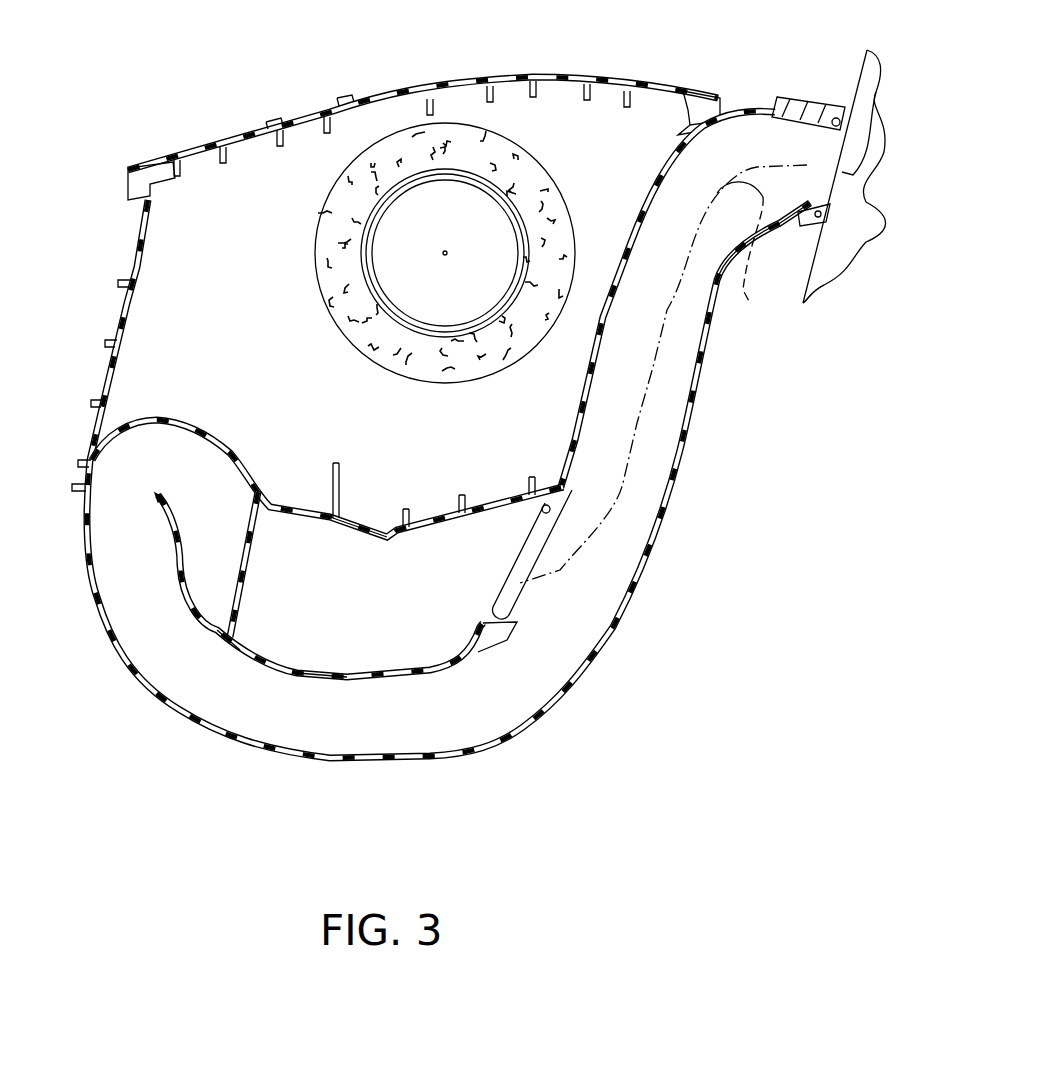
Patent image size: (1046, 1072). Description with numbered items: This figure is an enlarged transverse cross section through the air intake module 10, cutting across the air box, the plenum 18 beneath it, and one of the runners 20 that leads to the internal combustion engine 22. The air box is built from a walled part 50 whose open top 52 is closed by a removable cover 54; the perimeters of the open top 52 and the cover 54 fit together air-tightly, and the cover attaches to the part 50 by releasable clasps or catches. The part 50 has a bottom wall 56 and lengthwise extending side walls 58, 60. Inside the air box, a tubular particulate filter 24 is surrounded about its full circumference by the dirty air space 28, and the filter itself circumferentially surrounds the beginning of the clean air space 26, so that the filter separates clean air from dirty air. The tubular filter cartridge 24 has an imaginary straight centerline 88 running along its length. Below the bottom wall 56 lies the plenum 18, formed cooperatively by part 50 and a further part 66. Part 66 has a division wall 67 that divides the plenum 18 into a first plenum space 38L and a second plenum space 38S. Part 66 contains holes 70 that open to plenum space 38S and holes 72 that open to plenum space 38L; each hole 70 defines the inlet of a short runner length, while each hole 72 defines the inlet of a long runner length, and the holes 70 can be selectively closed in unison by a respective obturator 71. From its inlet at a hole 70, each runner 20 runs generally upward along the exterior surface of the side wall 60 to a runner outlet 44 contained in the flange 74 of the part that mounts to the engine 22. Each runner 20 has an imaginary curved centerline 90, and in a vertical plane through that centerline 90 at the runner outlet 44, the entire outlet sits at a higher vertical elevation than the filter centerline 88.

The air intake module 10 is at (230, 758).
The plenum 18 is at (225, 645).
The runners 20 is at (650, 556).
The internal combustion engine 22 is at (838, 285).
The tubular particulate filter 24 is at (463, 124).
The clean air space 26 is at (458, 296).
The dirty air space 28 is at (311, 397).
The first plenum space 38L is at (211, 477).
The second plenum space 38S is at (396, 617).
The runner outlets 44 is at (872, 88).
The walled part 50 is at (131, 278).
The open top 52 is at (140, 232).
The removable cover 54 is at (312, 112).
The bottom wall 56 is at (375, 520).
The side wall 58 is at (110, 375).
The side wall 60 is at (585, 420).
The part 66 is at (177, 580).
The division wall 67 is at (243, 570).
The holes 70 is at (557, 523).
The obturator 71 is at (517, 592).
The holes 72 is at (128, 497).
The flange 74 is at (794, 96).
The straight centerline 88 is at (443, 254).
The curved centerline 90 is at (752, 304).